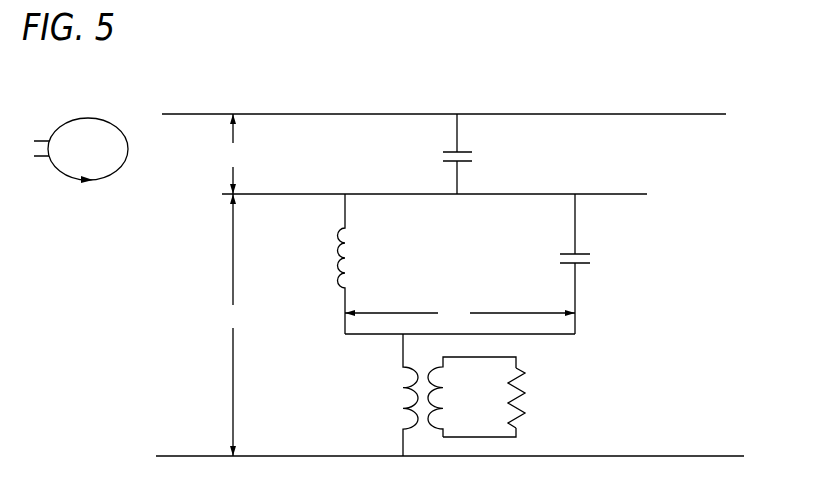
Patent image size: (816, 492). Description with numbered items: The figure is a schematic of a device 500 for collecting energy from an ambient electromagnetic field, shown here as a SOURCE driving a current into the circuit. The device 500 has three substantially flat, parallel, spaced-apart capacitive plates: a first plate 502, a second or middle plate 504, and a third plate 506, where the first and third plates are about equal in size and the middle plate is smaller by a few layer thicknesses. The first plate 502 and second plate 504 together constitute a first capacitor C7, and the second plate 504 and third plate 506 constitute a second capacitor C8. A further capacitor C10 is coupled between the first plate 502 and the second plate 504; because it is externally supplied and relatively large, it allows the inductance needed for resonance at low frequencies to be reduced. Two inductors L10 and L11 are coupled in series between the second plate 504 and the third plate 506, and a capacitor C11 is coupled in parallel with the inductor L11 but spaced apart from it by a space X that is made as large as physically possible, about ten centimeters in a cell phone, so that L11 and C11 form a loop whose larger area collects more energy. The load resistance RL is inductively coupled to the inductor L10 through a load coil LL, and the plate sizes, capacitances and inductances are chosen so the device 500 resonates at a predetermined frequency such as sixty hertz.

The device for collecting energy 500 is at (243, 96).
The first substantially flat capacitive plate 502 is at (681, 113).
The second substantially flat capacitive plate 504 is at (599, 193).
The third substantially flat capacitive plate 506 is at (697, 456).
The first capacitor C7 is at (233, 154).
The second capacitor C8 is at (233, 325).
The further capacitor C10 is at (481, 154).
The capacitor C11 is at (598, 264).
The inductor L10 is at (385, 395).
The inductor L11 is at (316, 264).
The load coil LL is at (472, 397).
The load resistance RL is at (533, 398).
The space X is at (460, 314).
The current source SOURCE is at (82, 152).